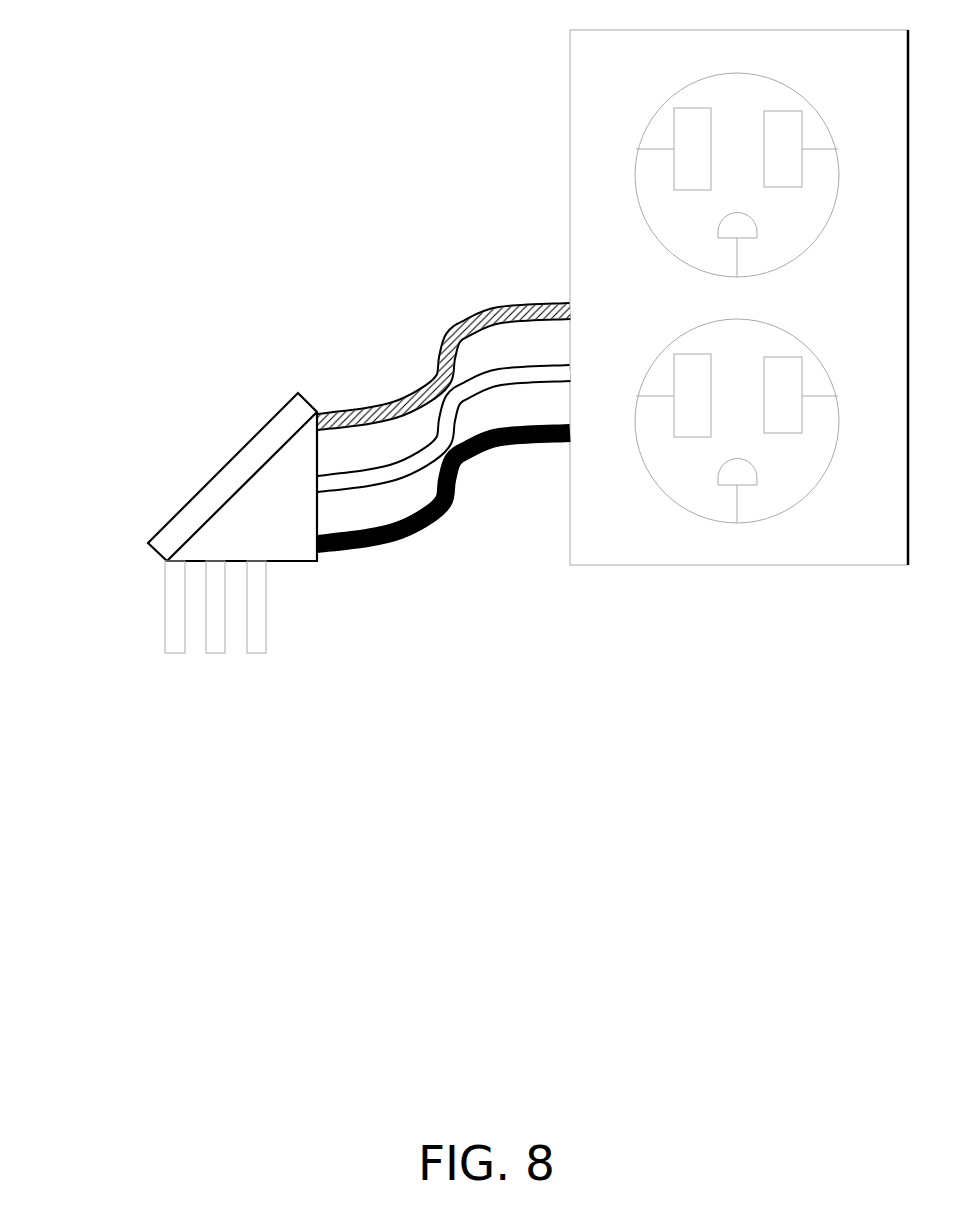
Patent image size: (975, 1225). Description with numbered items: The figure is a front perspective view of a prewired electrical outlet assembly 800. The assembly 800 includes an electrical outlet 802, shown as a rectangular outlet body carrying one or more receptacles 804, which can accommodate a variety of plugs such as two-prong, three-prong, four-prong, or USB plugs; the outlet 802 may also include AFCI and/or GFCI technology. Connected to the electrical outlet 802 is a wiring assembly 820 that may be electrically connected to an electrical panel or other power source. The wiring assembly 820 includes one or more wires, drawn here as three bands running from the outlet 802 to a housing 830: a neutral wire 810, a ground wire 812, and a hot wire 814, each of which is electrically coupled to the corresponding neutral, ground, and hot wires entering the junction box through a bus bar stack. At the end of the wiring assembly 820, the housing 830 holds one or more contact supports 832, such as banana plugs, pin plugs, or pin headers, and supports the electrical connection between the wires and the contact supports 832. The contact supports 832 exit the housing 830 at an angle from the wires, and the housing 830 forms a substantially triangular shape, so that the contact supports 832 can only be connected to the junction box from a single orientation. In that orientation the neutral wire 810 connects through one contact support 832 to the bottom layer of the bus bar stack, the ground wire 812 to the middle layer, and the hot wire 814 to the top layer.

The prewired electrical outlet assembly 800 is at (669, 827).
The electrical outlet 802 is at (797, 567).
The receptacles 804 is at (695, 466).
The neutral wire 810 is at (505, 306).
The ground wire 812 is at (448, 405).
The hot wire 814 is at (370, 527).
The wiring assembly 820 is at (229, 365).
The housing 830 is at (190, 513).
The contact supports 832 is at (175, 598).